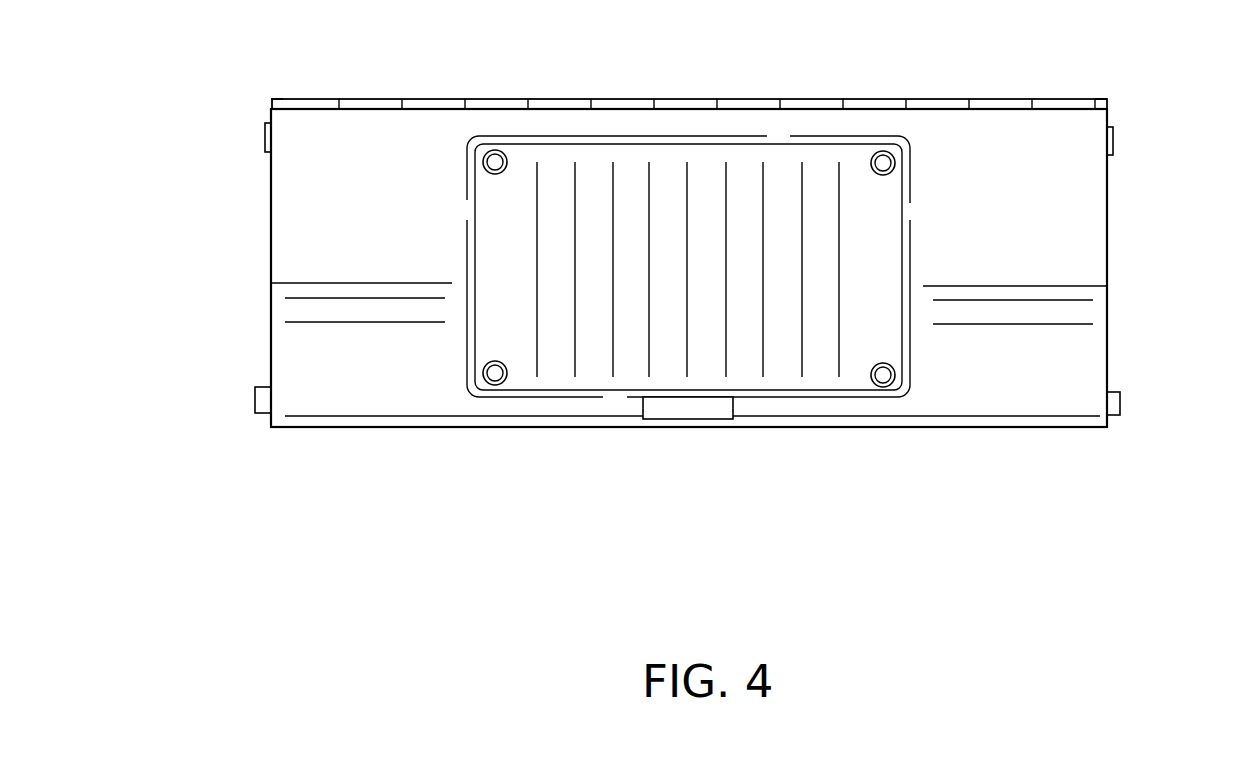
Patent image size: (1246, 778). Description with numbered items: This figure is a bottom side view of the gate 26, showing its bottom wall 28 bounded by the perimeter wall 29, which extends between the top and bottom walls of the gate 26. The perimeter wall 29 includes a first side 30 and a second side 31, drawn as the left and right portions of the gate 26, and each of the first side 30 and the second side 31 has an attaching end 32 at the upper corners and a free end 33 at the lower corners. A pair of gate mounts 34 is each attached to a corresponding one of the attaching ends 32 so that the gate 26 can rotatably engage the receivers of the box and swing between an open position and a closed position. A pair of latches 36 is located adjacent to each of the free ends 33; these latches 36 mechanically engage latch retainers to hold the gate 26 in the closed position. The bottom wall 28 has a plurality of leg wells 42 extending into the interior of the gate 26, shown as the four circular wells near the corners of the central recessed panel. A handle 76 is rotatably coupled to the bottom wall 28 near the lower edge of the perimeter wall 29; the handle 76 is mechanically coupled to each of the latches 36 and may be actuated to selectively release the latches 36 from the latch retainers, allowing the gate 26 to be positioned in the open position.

The gate 26 is at (271, 428).
The bottom wall 28 is at (1023, 223).
The perimeter wall 29 is at (763, 428).
The first side 30 is at (271, 262).
The second side 31 is at (1107, 286).
The attaching end 32 is at (271, 111).
The free end 33 is at (271, 427).
The gate mount 34 is at (265, 137).
The latch 36 is at (255, 403).
The leg well 42 is at (495, 153).
The handle 76 is at (685, 419).